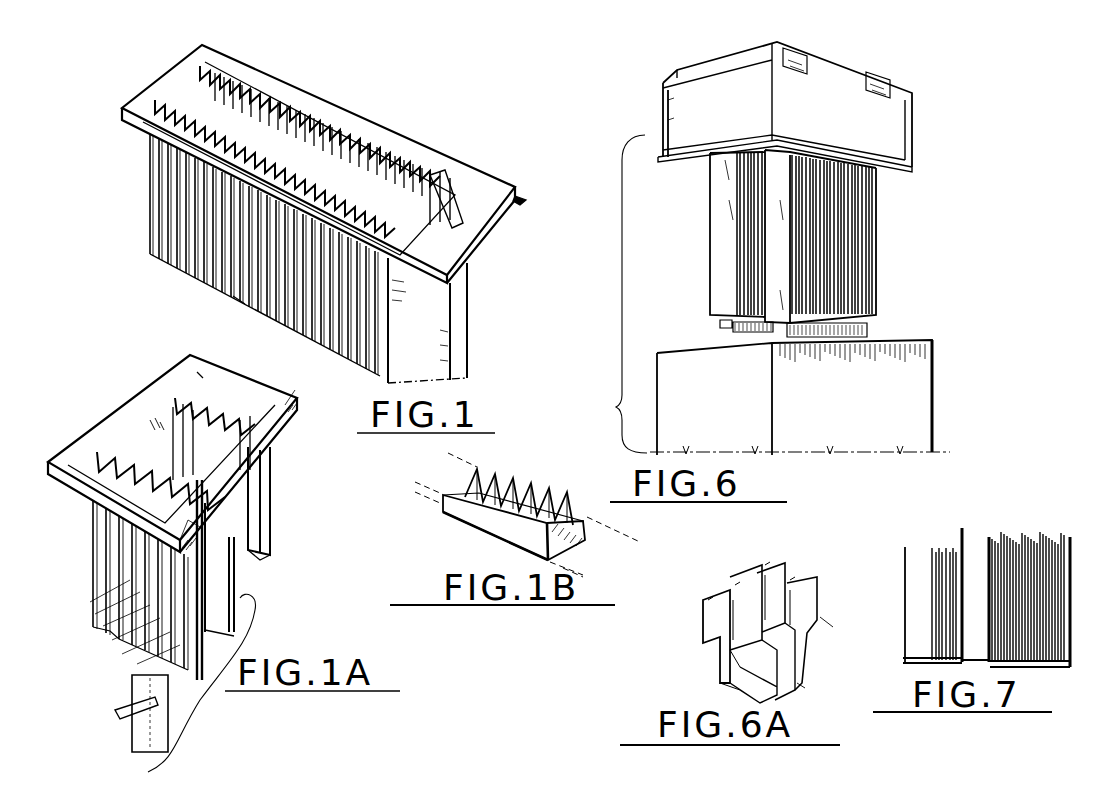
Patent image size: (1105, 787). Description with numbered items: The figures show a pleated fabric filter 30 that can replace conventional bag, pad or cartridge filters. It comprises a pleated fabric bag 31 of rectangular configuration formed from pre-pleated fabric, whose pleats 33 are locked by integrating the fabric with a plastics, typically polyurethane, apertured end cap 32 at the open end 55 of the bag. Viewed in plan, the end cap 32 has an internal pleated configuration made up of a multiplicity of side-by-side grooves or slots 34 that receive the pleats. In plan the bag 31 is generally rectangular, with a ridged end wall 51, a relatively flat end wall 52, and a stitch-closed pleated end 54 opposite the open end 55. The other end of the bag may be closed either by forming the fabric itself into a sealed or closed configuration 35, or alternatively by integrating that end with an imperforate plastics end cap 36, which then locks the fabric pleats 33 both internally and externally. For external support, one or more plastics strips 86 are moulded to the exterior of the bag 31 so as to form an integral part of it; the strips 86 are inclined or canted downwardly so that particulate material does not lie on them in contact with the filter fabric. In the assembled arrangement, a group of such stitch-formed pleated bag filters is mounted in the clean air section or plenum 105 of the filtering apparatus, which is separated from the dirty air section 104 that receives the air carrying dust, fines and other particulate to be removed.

In FIG. 6, the pleated fabric filter 30 is at (708, 257).
In FIG. 7, the pleated fabric filter 30 is at (920, 597).
In FIG. 1, the pleated fabric bag 31 is at (340, 360).
In FIG. 1A, the pleated fabric bag 31 is at (92, 539).
In FIG. 1, the apertured end cap 32 is at (528, 212).
In FIG. 1A, the apertured end cap 32 is at (202, 368).
In FIG. 1, the pleats 33 is at (212, 230).
In FIG. 1A, the pleats 33 is at (147, 574).
In FIG. 1, the grooves or slots 34 is at (330, 121).
In FIG. 1A, the grooves or slots 34 is at (205, 400).
In FIG. 6, the sealed or closed configuration 35 is at (719, 327).
In FIG. 7, the imperforate end cap 36 is at (913, 662).
In FIG. 6, the ridged end wall 51 is at (877, 283).
In FIG. 1, the flat end wall 52 is at (235, 301).
In FIG. 1A, the flat end wall 52 is at (282, 472).
In FIG. 6, the flat end wall 52 is at (785, 198).
In FIG. 7, the flat end wall 52 is at (920, 553).
In FIG. 6A, the stitch-closed pleated end 54 is at (722, 675).
In FIG. 1, the open end 55 is at (460, 211).
In FIG. 1A, the open end 55 is at (148, 422).
In FIG. 1A, the plastics strips 86 is at (143, 638).
In FIG. 1B, the plastics strips 86 is at (508, 512).
In FIG. 6, the dirty air section 104 is at (919, 352).
In FIG. 6, the clean air section or plenum 105 is at (914, 112).